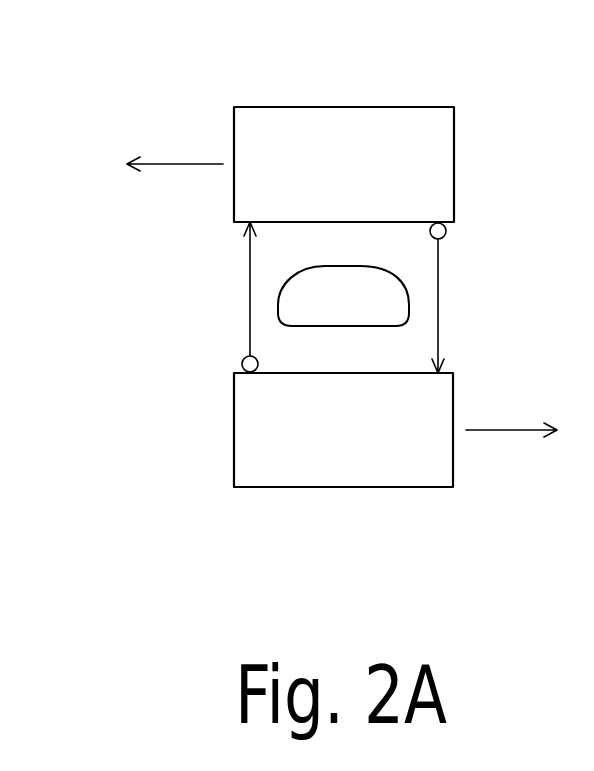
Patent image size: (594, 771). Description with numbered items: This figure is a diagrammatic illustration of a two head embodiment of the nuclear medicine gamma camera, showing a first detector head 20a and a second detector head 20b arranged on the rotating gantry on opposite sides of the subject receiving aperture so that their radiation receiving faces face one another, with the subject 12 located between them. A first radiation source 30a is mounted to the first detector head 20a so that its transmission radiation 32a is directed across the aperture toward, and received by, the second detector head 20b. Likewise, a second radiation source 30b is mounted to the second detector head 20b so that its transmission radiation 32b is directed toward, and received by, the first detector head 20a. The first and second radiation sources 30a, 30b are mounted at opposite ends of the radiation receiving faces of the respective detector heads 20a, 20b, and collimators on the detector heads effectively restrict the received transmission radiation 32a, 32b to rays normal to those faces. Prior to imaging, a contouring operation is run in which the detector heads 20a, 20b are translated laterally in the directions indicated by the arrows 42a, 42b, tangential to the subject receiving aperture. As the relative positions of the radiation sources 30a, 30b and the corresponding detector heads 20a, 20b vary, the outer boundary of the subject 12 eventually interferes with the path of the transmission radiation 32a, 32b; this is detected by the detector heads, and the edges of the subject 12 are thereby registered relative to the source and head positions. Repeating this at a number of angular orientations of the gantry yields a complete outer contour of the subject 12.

The subject 12 is at (330, 314).
The first detector head 20a is at (344, 118).
The second detector head 20b is at (247, 430).
The first radiation source 30a is at (448, 231).
The second radiation source 30b is at (242, 364).
The transmission radiation 32a is at (440, 298).
The transmission radiation 32b is at (246, 299).
The lateral translation direction 42a is at (188, 164).
The lateral translation direction 42b is at (492, 430).